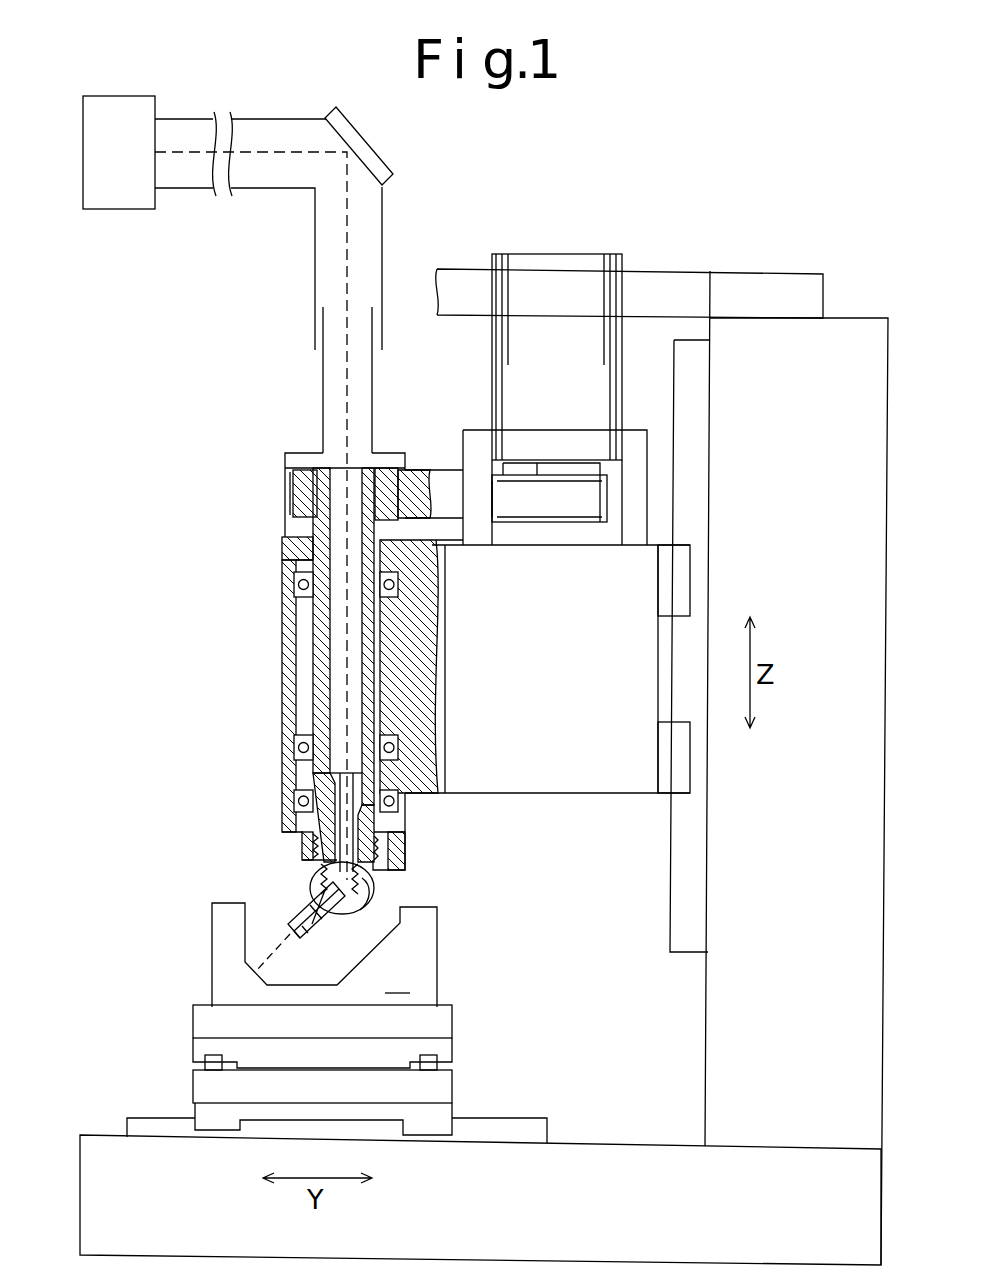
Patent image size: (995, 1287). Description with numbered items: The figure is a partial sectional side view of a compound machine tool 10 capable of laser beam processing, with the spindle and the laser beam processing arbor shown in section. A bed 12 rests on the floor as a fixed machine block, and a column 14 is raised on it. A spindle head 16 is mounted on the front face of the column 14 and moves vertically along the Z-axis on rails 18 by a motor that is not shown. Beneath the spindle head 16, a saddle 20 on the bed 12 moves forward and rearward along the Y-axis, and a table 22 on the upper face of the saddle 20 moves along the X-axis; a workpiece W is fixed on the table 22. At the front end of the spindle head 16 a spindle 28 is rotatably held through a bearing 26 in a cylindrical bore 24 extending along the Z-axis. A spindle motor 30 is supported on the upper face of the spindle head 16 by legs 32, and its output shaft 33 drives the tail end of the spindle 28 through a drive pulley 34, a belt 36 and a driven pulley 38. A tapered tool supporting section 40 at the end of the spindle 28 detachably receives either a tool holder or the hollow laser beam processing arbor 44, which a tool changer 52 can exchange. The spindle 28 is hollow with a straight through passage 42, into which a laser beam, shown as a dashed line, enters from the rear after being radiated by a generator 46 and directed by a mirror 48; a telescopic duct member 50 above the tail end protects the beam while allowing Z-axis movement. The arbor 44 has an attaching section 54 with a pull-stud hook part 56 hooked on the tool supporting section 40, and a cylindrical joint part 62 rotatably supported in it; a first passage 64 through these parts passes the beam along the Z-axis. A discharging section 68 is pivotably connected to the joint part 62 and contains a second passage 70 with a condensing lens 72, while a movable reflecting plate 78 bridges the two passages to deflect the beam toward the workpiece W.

The compound machine tool 10 is at (228, 347).
The bed 12 is at (547, 1219).
The column 14 is at (803, 877).
The spindle head 16 is at (562, 677).
The rails 18 is at (680, 885).
The saddle 20 is at (438, 1096).
The table 22 is at (438, 1027).
The cylindrical bore 24 is at (298, 694).
The bearing 26 is at (302, 580).
The spindle 28 is at (313, 638).
The spindle motor 30 is at (583, 273).
The legs 32 is at (630, 445).
The output shaft 33 is at (573, 470).
The drive pulley 34 is at (545, 528).
The belt 36 is at (447, 483).
The driven pulley 38 is at (307, 490).
The tool supporting section 40 is at (412, 795).
The straight through passage 42 is at (337, 478).
The laser beam processing arbor 44 is at (282, 868).
The generator 46 is at (129, 169).
The mirror 48 is at (352, 130).
The duct member 50 is at (313, 233).
The tool changer 52 is at (683, 282).
The attaching section 54 is at (410, 812).
The pull-stud hook part 56 is at (325, 770).
The joint part 62 is at (377, 877).
The first passage 64 is at (308, 862).
The discharging section 68 is at (337, 922).
The second passage 70 is at (303, 897).
The lens 72 is at (305, 933).
The movable reflecting plate 78 is at (377, 890).
The workpiece W is at (403, 930).